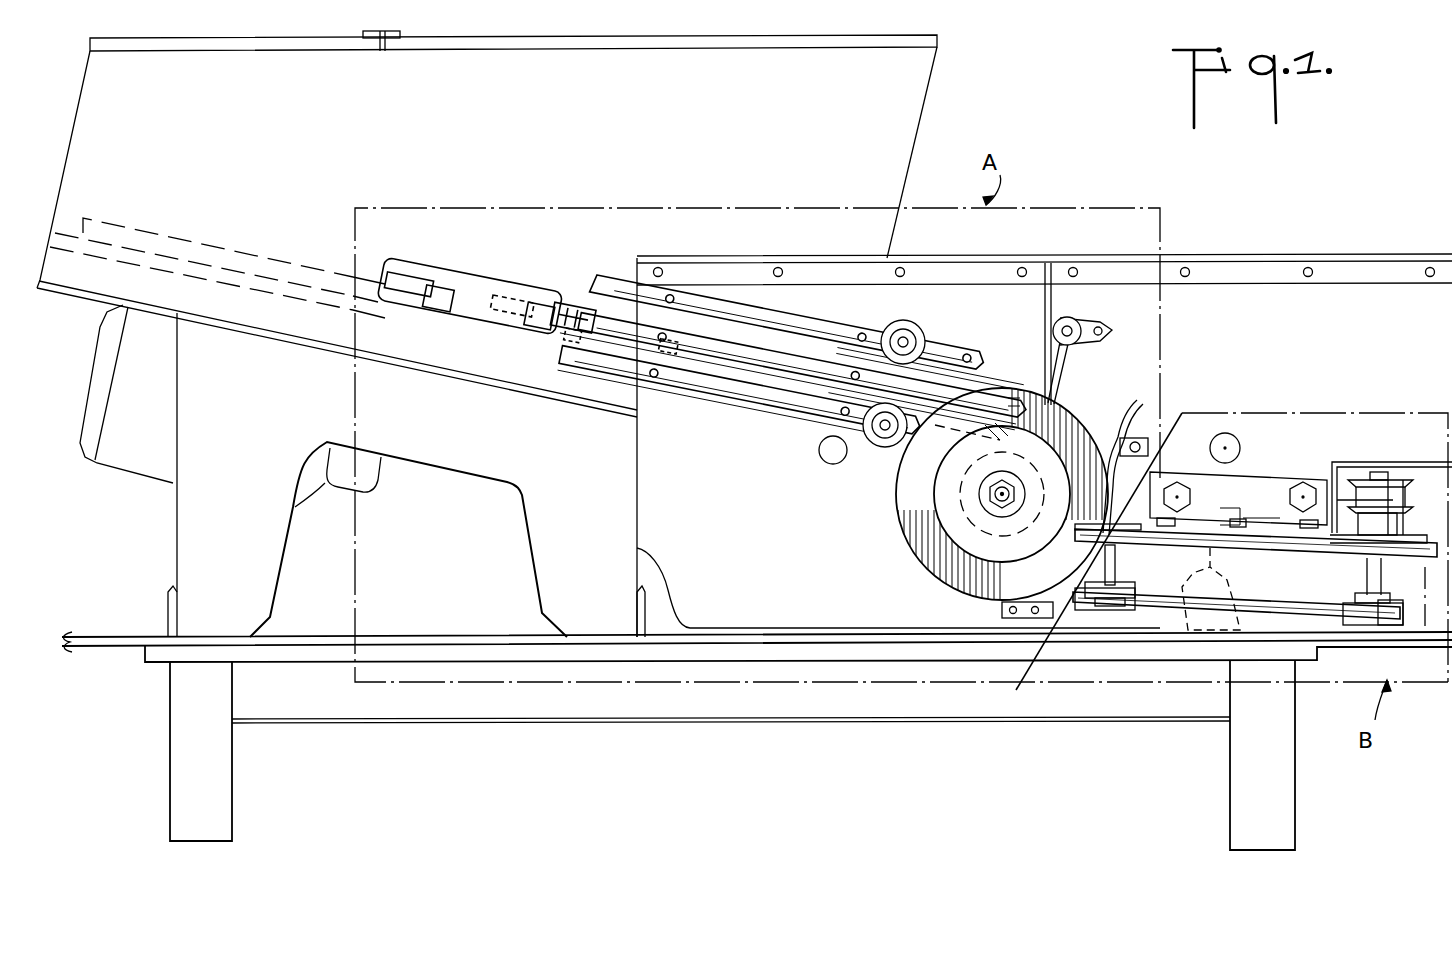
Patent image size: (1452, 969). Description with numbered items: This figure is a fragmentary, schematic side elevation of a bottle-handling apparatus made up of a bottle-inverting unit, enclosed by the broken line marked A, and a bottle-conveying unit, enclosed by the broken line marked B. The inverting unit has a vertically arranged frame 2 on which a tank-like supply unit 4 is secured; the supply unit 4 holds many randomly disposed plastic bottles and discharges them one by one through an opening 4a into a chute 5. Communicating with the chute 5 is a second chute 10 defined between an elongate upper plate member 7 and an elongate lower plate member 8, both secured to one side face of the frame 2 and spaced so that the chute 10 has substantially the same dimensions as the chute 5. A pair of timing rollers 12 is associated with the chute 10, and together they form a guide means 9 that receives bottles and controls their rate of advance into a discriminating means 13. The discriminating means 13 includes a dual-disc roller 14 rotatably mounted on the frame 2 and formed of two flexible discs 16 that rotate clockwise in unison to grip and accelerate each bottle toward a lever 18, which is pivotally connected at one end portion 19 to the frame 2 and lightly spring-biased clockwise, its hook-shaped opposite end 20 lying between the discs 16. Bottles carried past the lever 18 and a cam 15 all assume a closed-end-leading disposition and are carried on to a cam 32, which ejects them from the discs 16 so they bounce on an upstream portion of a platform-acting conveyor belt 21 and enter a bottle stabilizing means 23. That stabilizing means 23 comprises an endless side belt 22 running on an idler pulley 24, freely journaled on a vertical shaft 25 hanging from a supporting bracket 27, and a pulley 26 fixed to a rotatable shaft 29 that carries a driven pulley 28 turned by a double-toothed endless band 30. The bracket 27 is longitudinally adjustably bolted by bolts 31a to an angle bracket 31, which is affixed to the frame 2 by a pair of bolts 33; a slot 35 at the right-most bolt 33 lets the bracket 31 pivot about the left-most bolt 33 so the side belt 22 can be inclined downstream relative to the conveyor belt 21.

The frame 2 is at (750, 516).
The supply unit 4 is at (398, 124).
The opening 4a is at (475, 272).
The chute 5 is at (620, 302).
The upper plate member 7 is at (811, 314).
The lower plate member 8 is at (785, 408).
The guide means 9 is at (985, 348).
The chute 10 is at (736, 412).
The timing rollers 12 is at (918, 327).
The discriminating means 13 is at (1138, 365).
The dual-disc roller 14 is at (935, 556).
The cam 15 is at (1128, 420).
The flexible discs 16 is at (908, 533).
The lever 18 is at (1060, 364).
The end portion 19 is at (1074, 318).
The opposite end 20 is at (1012, 432).
The conveyor belt 21 is at (1395, 640).
The endless side belt 22 is at (1276, 610).
The bottle stabilizing means 23 is at (1168, 625).
The idler pulley 24 is at (1120, 587).
The shaft 25 is at (1108, 568).
The pulley 26 is at (1358, 596).
The supporting bracket 27 is at (1220, 590).
The driven pulley 28 is at (1400, 502).
The shaft 29 is at (1384, 576).
The endless band 30 is at (1342, 490).
The angle bracket 31 is at (1245, 480).
The bolts 31a is at (1232, 514).
The cam 32 is at (1088, 426).
The bolts 33 is at (1180, 485).
The slot 35 is at (1288, 518).